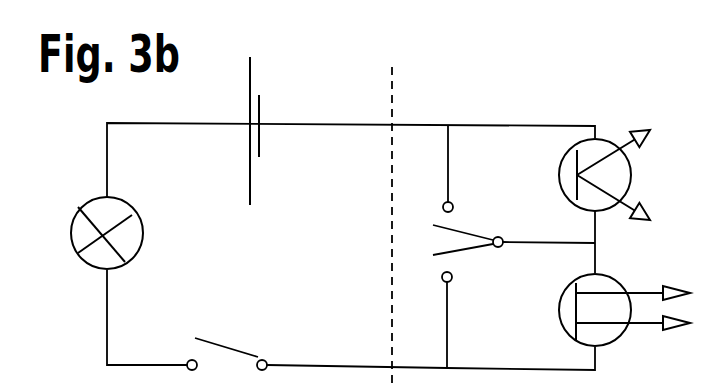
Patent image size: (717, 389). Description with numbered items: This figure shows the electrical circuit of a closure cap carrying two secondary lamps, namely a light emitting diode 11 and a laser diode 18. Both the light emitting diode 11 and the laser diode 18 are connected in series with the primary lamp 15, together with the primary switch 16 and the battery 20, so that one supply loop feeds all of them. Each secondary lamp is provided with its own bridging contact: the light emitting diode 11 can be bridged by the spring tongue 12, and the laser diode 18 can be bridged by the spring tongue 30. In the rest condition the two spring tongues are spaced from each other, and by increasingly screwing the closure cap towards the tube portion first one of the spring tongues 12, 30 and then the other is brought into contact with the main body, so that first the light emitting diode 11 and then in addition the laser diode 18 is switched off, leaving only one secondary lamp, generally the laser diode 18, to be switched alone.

The light emitting diode 11 is at (613, 175).
The spring tongue 12 is at (514, 186).
The primary lamp 15 is at (87, 233).
The primary switch 16 is at (227, 363).
The laser diode 18 is at (624, 319).
The battery 20 is at (251, 111).
The spring tongue 30 is at (465, 306).